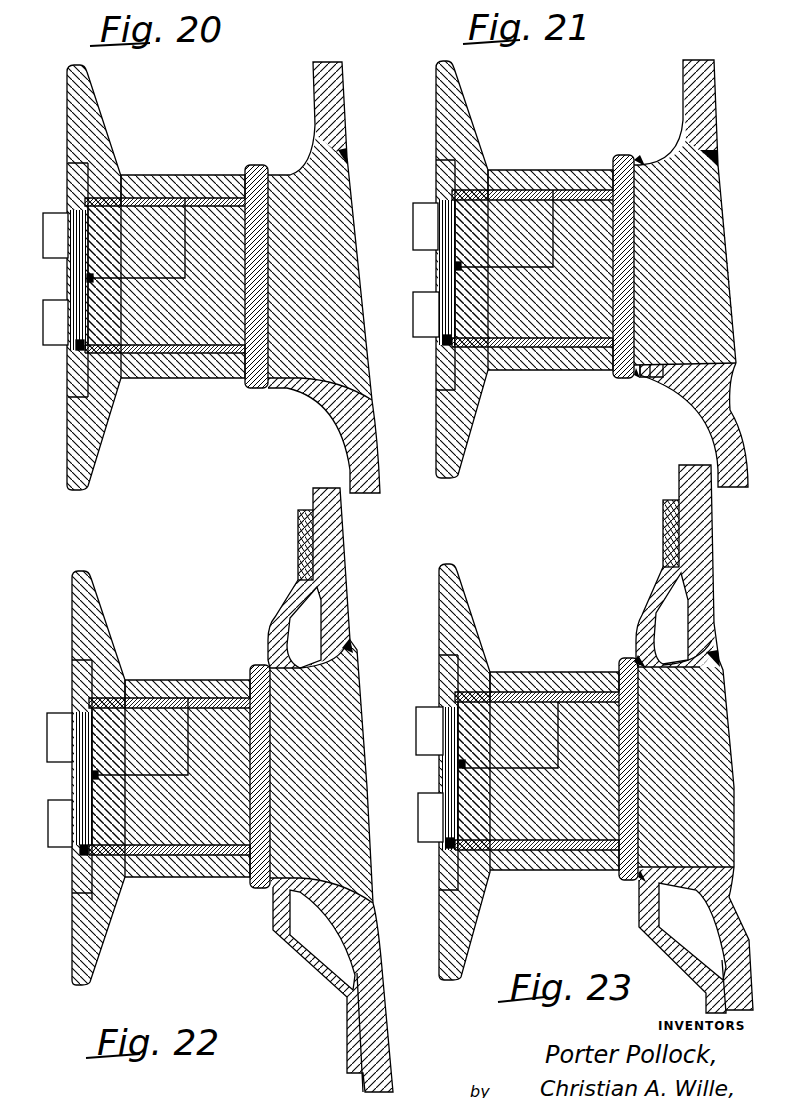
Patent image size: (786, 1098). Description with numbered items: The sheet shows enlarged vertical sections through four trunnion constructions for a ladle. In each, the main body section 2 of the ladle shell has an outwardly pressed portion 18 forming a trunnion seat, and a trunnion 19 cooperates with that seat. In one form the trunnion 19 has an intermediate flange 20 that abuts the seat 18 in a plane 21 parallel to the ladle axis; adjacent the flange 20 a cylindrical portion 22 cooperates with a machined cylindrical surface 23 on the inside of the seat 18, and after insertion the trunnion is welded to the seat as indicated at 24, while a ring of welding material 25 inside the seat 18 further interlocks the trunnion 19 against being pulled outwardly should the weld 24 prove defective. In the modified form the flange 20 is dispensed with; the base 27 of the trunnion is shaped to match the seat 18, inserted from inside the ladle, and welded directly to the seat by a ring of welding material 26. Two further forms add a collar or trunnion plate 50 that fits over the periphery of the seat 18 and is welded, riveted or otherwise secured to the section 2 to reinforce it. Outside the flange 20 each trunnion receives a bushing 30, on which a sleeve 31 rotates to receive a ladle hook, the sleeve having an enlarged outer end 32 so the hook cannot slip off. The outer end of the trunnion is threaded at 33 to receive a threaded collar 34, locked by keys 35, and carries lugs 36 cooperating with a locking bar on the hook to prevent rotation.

In FIG. 20, the main body section 2 is at (385, 493).
In FIG. 21, the main body section 2 is at (716, 73).
In FIG. 22, the main body section 2 is at (394, 1061).
In FIG. 23, the main body section 2 is at (712, 528).
In FIG. 20, the outwardly pressed portion 18 is at (333, 410).
In FIG. 21, the outwardly pressed portion 18 is at (712, 421).
In FIG. 22, the outwardly pressed portion 18 is at (300, 895).
In FIG. 23, the outwardly pressed portion 18 is at (672, 888).
In FIG. 20, the trunnion 19 is at (320, 262).
In FIG. 21, the trunnion 19 is at (685, 242).
In FIG. 22, the trunnion 19 is at (321, 771).
In FIG. 23, the trunnion 19 is at (686, 767).
In FIG. 21, the intermediate flange 20 is at (619, 160).
In FIG. 23, the intermediate flange 20 is at (621, 665).
In FIG. 21, the plane 21 is at (611, 368).
In FIG. 23, the plane 21 is at (613, 878).
In FIG. 21, the cylindrical portion 22 is at (640, 380).
In FIG. 21, the machined cylindrical surface 23 is at (663, 372).
In FIG. 21, the weld 24 is at (634, 158).
In FIG. 23, the weld 24 is at (636, 655).
In FIG. 20, the ring of welding material 25 is at (348, 153).
In FIG. 21, the ring of welding material 25 is at (713, 155).
In FIG. 22, the ring of welding material 25 is at (353, 653).
In FIG. 23, the ring of welding material 25 is at (721, 664).
In FIG. 20, the ring of welding material 26 is at (262, 166).
In FIG. 22, the ring of welding material 26 is at (256, 666).
In FIG. 20, the base 27 is at (350, 191).
In FIG. 21, the base 27 is at (718, 227).
In FIG. 22, the base 27 is at (365, 771).
In FIG. 23, the base 27 is at (733, 763).
In FIG. 20, the bushing 30 is at (172, 352).
In FIG. 21, the bushing 30 is at (533, 192).
In FIG. 22, the bushing 30 is at (193, 857).
In FIG. 23, the bushing 30 is at (535, 690).
In FIG. 20, the sleeve 31 is at (147, 187).
In FIG. 21, the sleeve 31 is at (506, 172).
In FIG. 22, the sleeve 31 is at (150, 686).
In FIG. 23, the sleeve 31 is at (510, 676).
In FIG. 20, the enlarged outer end 32 is at (88, 84).
In FIG. 21, the enlarged outer end 32 is at (452, 84).
In FIG. 22, the enlarged outer end 32 is at (92, 602).
In FIG. 23, the enlarged outer end 32 is at (464, 603).
In FIG. 20, the threaded outer end 33 is at (75, 276).
In FIG. 21, the threaded outer end 33 is at (452, 268).
In FIG. 20, the threaded collar 34 is at (75, 382).
In FIG. 21, the threaded collar 34 is at (451, 361).
In FIG. 22, the threaded collar 34 is at (78, 681).
In FIG. 20, the key 35 is at (78, 348).
In FIG. 21, the key 35 is at (443, 341).
In FIG. 20, the lug 36 is at (45, 230).
In FIG. 21, the lug 36 is at (418, 217).
In FIG. 22, the collar or trunnion plate 50 is at (298, 538).
In FIG. 23, the collar or trunnion plate 50 is at (663, 535).